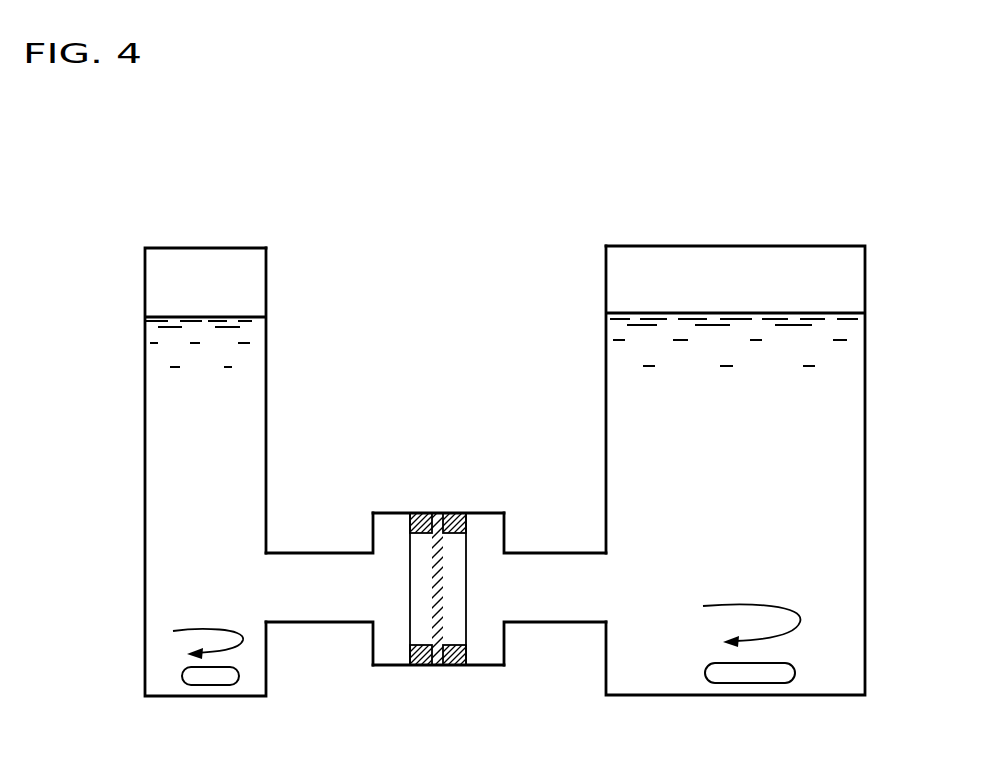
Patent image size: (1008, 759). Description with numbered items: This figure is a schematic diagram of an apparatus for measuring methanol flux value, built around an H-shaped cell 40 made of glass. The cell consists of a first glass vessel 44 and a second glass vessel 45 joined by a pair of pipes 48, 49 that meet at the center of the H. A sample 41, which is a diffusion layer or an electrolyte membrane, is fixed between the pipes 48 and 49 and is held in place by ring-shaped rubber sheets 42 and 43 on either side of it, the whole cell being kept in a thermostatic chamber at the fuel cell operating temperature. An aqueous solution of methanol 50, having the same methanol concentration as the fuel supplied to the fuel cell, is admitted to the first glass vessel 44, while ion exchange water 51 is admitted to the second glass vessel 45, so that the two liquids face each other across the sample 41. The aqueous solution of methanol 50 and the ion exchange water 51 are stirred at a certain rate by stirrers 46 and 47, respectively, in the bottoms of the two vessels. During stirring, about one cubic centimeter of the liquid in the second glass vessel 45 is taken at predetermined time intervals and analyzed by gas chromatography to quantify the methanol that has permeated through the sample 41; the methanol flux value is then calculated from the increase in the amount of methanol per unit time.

The H-shaped cell 40 is at (500, 436).
The sample 41 is at (430, 584).
The ring-shaped rubber sheet 42 is at (423, 664).
The ring-shaped rubber sheet 43 is at (453, 664).
The first glass vessel 44 is at (266, 402).
The second glass vessel 45 is at (604, 367).
The stirrer 46 is at (210, 675).
The stirrer 47 is at (752, 673).
The pipe 48 is at (343, 572).
The pipe 49 is at (515, 568).
The aqueous solution of methanol 50 is at (177, 480).
The ion exchange water 51 is at (823, 452).